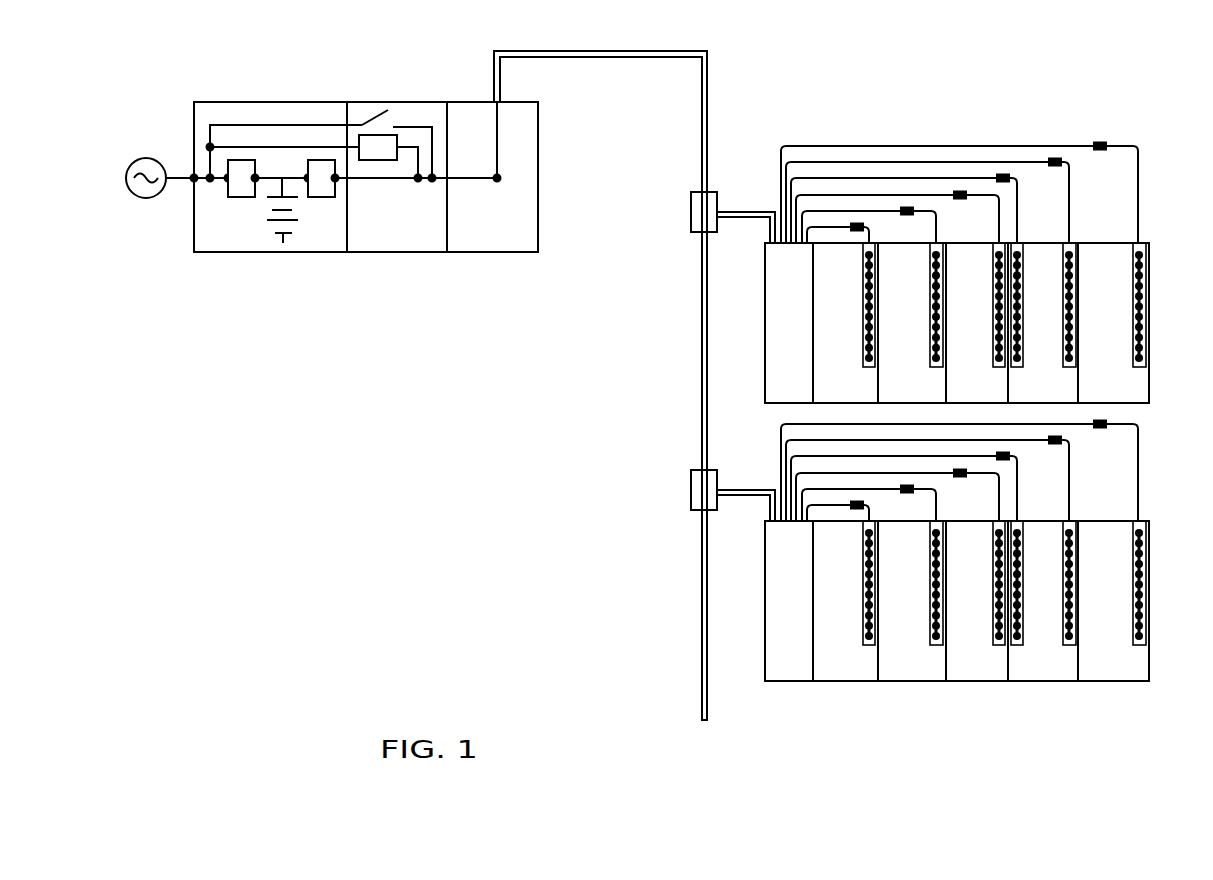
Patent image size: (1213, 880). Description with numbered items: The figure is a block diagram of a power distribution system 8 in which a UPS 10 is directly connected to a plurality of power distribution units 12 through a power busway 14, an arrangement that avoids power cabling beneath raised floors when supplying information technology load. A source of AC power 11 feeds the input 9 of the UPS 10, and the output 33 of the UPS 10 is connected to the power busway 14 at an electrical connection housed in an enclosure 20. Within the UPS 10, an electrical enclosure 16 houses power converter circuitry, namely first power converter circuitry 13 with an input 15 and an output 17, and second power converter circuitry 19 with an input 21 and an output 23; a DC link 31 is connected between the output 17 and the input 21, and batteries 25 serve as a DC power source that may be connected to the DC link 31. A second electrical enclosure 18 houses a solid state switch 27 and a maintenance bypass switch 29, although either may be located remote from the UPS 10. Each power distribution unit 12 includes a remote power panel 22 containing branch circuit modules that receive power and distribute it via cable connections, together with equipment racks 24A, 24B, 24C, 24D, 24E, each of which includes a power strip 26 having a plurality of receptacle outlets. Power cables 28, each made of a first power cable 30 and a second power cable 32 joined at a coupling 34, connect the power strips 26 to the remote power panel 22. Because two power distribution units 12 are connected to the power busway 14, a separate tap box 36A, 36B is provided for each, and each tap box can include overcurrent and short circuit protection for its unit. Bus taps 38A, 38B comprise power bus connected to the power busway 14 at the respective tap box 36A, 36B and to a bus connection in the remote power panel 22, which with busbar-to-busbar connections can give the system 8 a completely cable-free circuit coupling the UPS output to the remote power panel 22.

The power distribution system 8 is at (567, 367).
The input 9 is at (192, 175).
The UPS 10 is at (188, 112).
The source of AC power 11 is at (146, 199).
The power distribution unit 12 is at (758, 258).
The first power converter circuitry 13 is at (236, 198).
The power busway 14 is at (708, 63).
The input 15 is at (226, 183).
The electrical enclosure 16 is at (265, 102).
The output 17 is at (256, 182).
The electrical enclosure 18 is at (366, 102).
The second power converter circuitry 19 is at (325, 198).
The enclosure 20 is at (468, 102).
The input 21 is at (307, 182).
The remote power panel 22 is at (785, 683).
The output 23 is at (336, 182).
The equipment rack 24A is at (848, 683).
The equipment rack 24B is at (915, 683).
The equipment rack 24C is at (981, 683).
The equipment rack 24D is at (1043, 683).
The equipment rack 24E is at (1118, 683).
The batteries 25 is at (282, 244).
The power strip 26 is at (866, 315).
The solid state switch 27 is at (387, 162).
The power cable 28 is at (981, 305).
The maintenance bypass switch 29 is at (388, 118).
The first power cable 30 is at (842, 146).
The DC link 31 is at (275, 172).
The second power cable 32 is at (1140, 170).
The output 33 is at (497, 182).
The coupling 34 is at (1100, 141).
The tap box 36A is at (691, 208).
The tap box 36B is at (691, 486).
The bus tap 38A is at (738, 210).
The bus tap 38B is at (738, 488).